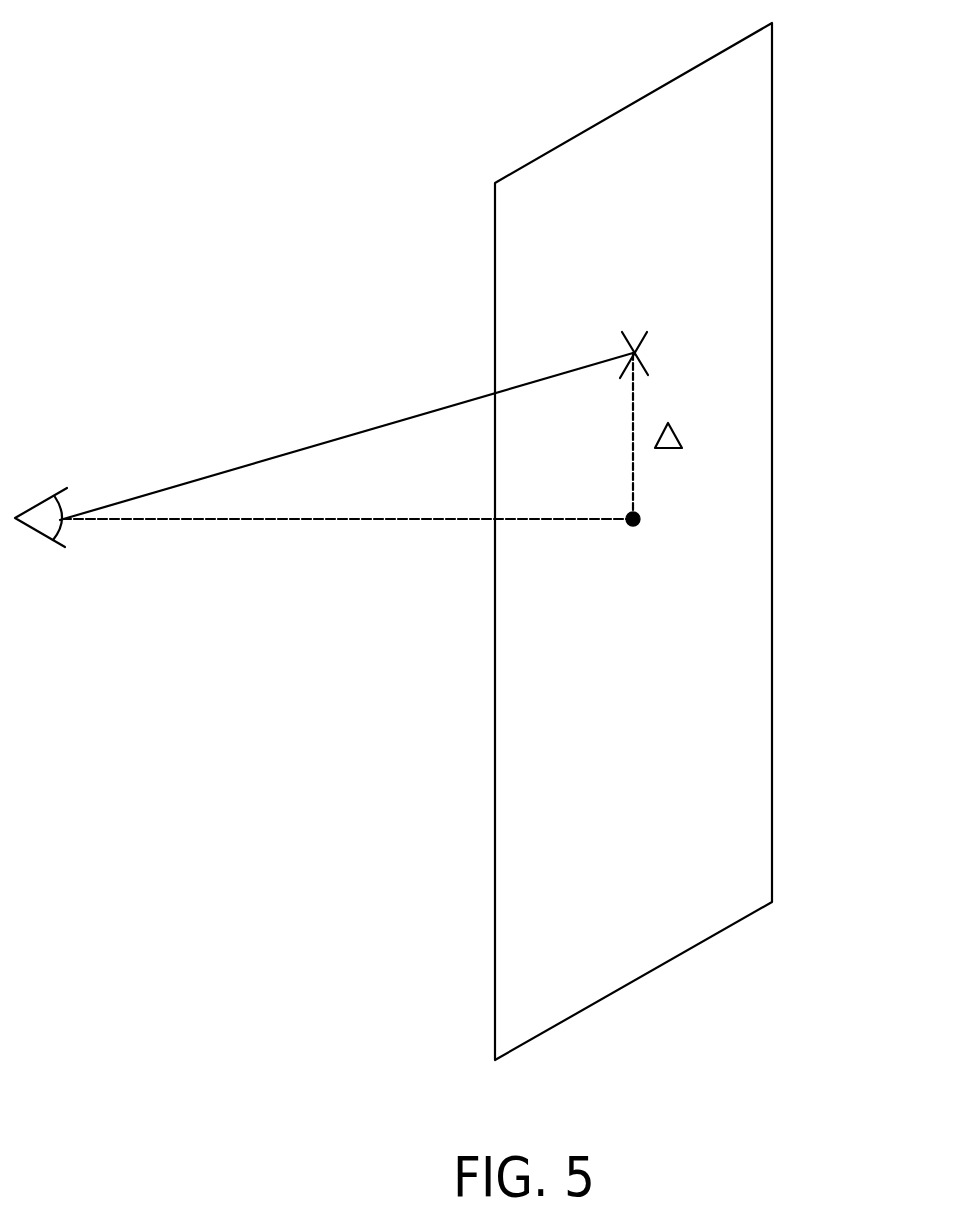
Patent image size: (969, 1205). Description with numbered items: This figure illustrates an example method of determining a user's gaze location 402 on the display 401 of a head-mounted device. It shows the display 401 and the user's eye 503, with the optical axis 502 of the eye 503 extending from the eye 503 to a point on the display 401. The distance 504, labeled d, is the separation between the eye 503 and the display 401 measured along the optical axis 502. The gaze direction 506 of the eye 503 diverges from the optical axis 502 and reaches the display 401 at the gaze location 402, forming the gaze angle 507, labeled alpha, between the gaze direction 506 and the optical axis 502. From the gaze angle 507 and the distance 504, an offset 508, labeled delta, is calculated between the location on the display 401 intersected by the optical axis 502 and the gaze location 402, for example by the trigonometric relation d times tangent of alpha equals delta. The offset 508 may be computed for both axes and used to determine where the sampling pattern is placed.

The display 401 is at (633, 983).
The gaze location 402 is at (635, 352).
The optical axis 502 is at (640, 520).
The eye 503 is at (37, 532).
The distance 504 is at (312, 522).
The gaze direction 506 is at (313, 443).
The gaze angle 507 is at (150, 493).
The offset 508 is at (682, 440).